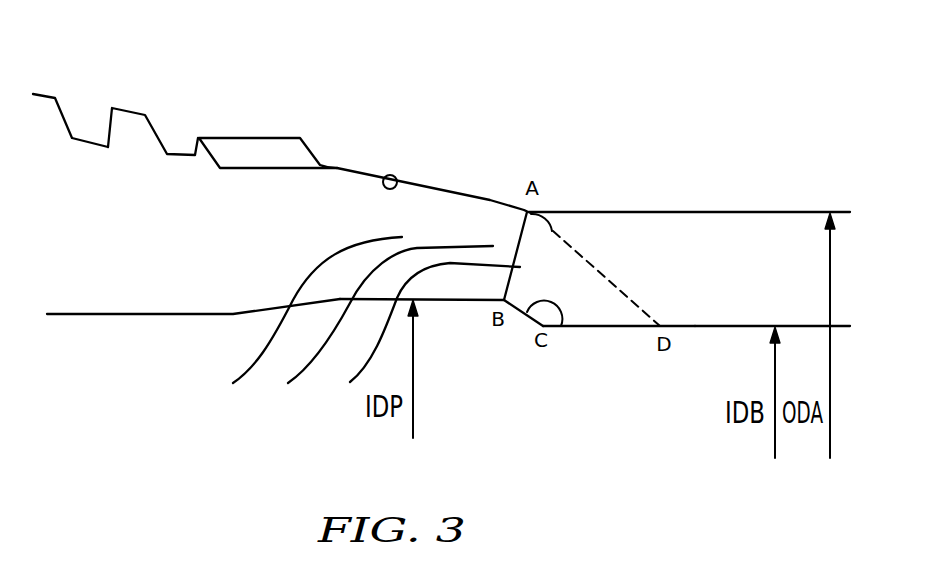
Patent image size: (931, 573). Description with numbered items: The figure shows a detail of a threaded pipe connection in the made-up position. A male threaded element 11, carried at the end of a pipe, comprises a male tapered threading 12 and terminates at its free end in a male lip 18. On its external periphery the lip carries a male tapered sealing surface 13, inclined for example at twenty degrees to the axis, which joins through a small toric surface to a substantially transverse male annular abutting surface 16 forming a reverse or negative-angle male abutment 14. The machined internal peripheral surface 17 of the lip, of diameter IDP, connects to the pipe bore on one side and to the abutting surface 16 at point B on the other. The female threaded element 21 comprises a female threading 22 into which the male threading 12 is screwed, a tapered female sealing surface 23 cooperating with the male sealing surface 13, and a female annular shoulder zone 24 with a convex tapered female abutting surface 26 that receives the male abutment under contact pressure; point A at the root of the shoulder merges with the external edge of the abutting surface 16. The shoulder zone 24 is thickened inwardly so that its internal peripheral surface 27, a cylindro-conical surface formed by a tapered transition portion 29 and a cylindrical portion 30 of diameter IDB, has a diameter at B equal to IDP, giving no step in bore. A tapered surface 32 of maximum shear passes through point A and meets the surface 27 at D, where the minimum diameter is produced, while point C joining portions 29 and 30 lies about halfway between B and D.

The male threaded element 11 is at (172, 250).
The male tapered threading 12 is at (132, 138).
The male tapered sealing surface 13 is at (388, 174).
The male abutment 14 is at (378, 328).
The male annular abutting surface 16 is at (421, 336).
The internal peripheral surface 17 is at (443, 302).
The male lip 18 is at (304, 322).
The female threaded element 21 is at (258, 84).
The female threading 22 is at (92, 122).
The tapered female sealing surface 23 is at (460, 191).
The female annular shoulder zone 24 is at (553, 265).
The female annular abutting surface 26 is at (552, 229).
The internal peripheral surface 27 is at (607, 327).
The transition portion 29 is at (560, 327).
The cylindrical portion 30 is at (697, 328).
The tapered surface 32 is at (638, 306).